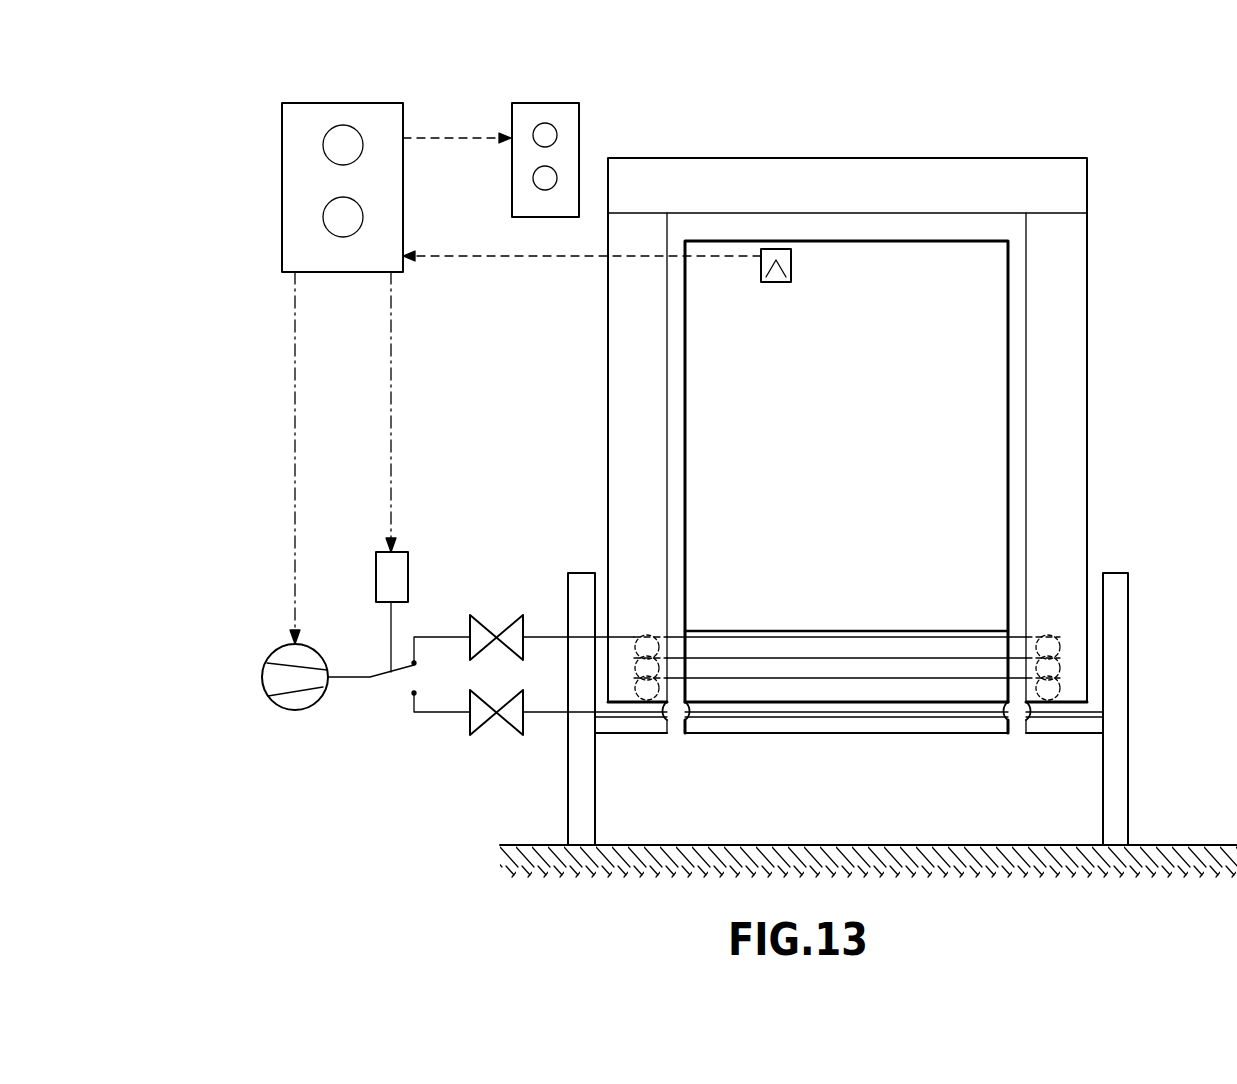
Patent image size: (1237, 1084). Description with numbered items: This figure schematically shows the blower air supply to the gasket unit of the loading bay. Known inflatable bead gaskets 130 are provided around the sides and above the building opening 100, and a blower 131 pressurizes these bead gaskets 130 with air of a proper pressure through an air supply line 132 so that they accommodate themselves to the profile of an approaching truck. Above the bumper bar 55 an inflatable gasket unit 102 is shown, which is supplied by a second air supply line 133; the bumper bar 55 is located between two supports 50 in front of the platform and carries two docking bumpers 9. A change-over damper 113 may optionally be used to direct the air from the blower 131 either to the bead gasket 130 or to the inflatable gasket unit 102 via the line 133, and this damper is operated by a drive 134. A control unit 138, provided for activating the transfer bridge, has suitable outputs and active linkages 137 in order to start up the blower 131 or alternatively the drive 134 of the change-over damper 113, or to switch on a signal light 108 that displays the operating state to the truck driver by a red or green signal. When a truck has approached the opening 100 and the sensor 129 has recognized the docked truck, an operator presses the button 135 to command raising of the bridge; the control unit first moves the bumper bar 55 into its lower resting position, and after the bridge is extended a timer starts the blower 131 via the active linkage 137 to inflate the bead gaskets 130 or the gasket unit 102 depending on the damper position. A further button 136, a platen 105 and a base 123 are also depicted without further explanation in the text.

The control unit 138 is at (305, 119).
The active linkages 137 is at (447, 138).
The signal light 108 is at (567, 117).
The button 135 is at (348, 153).
The controller indicator 136 is at (350, 227).
The inflatable bead gaskets 130 is at (827, 185).
The sensor 129 is at (792, 258).
The building opening 100 is at (1010, 509).
The platen 105 is at (866, 608).
The inflatable gasket unit 102 is at (990, 707).
The drive 134 is at (387, 578).
The air supply line 132 is at (553, 637).
The second air supply line 133 is at (550, 712).
The blower 131 is at (290, 683).
The change-over damper 113 is at (390, 685).
The docking bumpers 9 is at (684, 742).
The base 123 is at (794, 805).
The bumper bar 55 is at (920, 713).
The supports 50 is at (1117, 747).